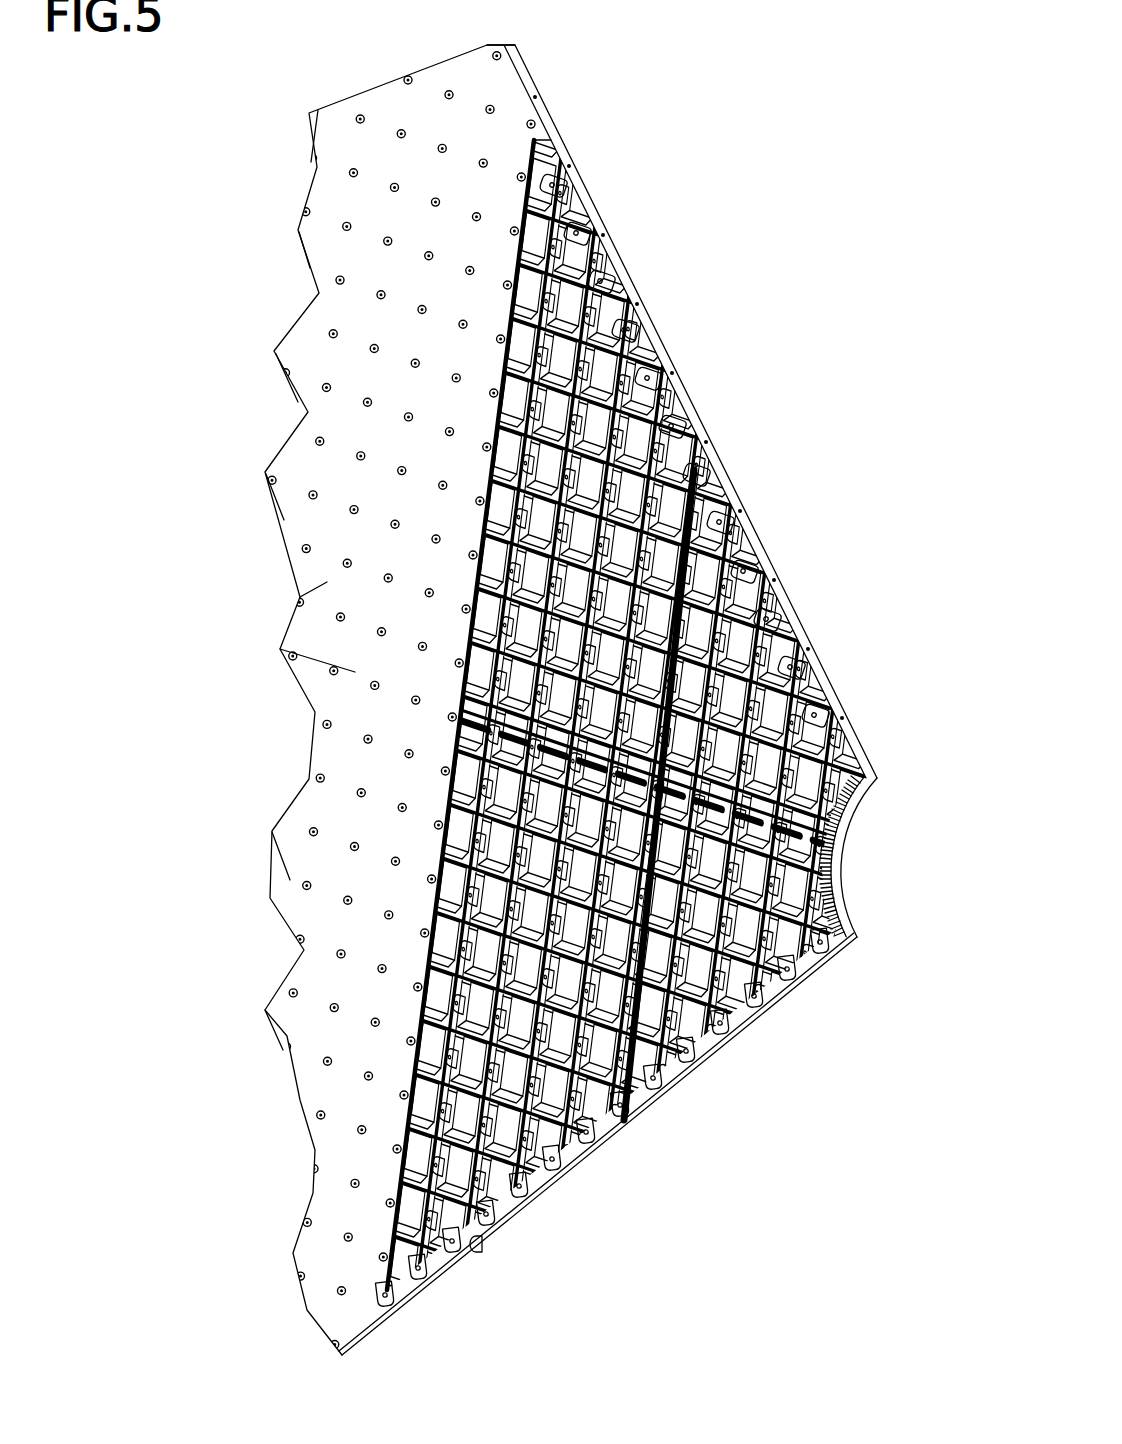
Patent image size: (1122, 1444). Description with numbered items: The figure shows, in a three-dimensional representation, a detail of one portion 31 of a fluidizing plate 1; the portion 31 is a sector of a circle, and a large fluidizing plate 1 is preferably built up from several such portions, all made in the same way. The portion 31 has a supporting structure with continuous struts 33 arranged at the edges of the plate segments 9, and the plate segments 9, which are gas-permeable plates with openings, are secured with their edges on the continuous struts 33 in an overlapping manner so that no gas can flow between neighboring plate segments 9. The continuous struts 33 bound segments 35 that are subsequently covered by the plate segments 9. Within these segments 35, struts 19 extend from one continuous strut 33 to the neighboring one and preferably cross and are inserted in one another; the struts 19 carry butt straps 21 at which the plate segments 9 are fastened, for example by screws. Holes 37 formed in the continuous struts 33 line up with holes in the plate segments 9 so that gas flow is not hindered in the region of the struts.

The fluidizing plate 1 is at (274, 1182).
The plate segments 9 is at (328, 582).
The struts 19 is at (556, 1016).
The butt straps 21 is at (480, 1246).
The portion 31 is at (662, 1154).
The continuous struts 33 is at (823, 858).
The segments 35 is at (598, 432).
The holes 37 is at (805, 690).